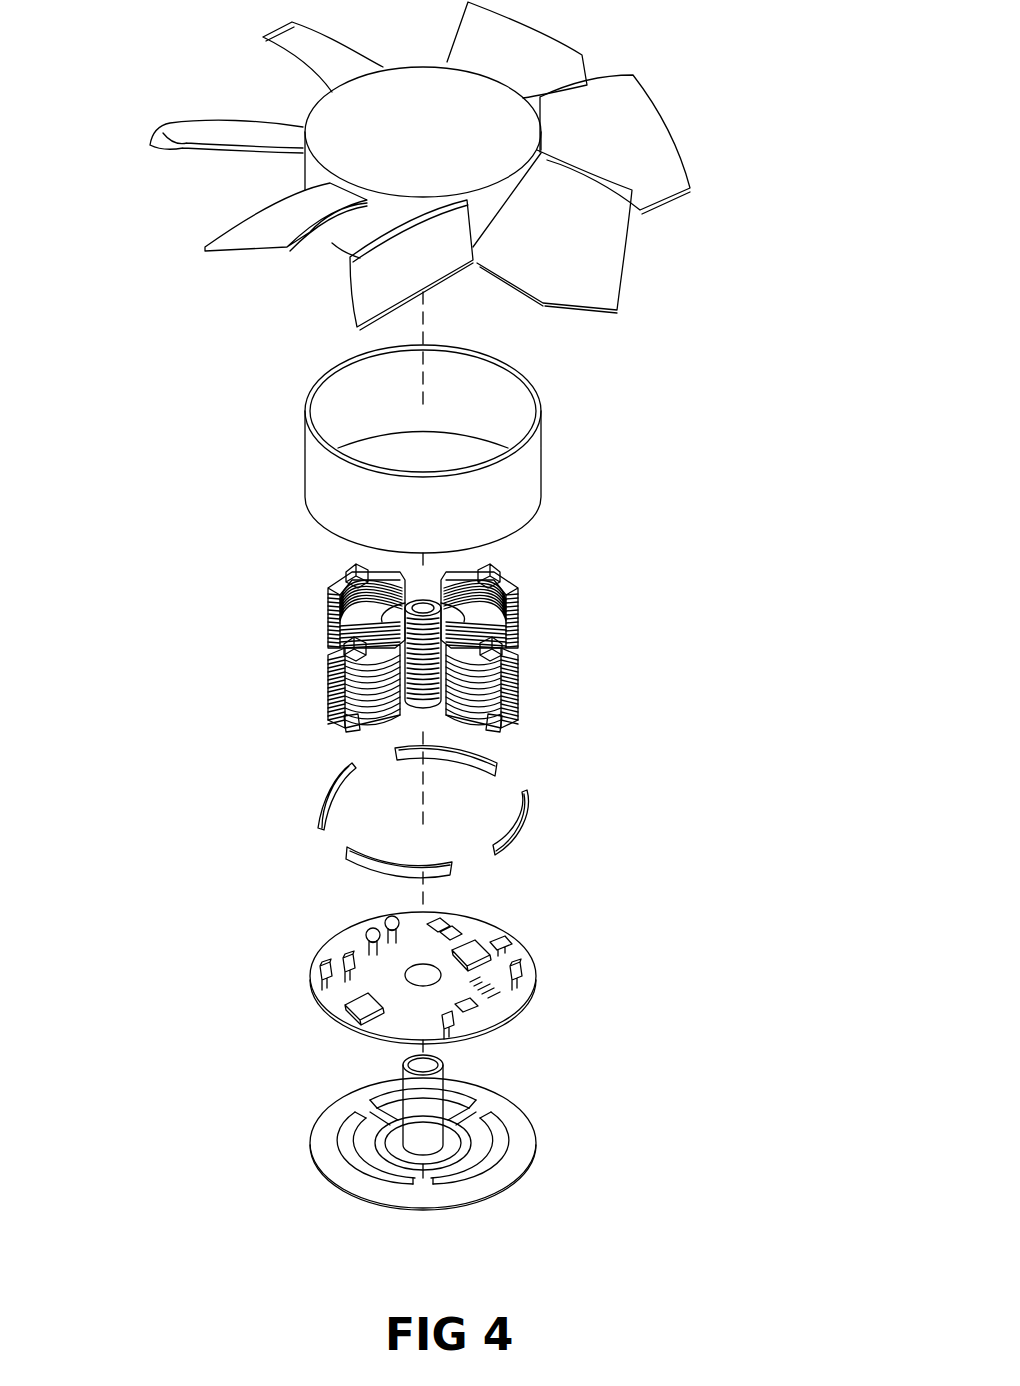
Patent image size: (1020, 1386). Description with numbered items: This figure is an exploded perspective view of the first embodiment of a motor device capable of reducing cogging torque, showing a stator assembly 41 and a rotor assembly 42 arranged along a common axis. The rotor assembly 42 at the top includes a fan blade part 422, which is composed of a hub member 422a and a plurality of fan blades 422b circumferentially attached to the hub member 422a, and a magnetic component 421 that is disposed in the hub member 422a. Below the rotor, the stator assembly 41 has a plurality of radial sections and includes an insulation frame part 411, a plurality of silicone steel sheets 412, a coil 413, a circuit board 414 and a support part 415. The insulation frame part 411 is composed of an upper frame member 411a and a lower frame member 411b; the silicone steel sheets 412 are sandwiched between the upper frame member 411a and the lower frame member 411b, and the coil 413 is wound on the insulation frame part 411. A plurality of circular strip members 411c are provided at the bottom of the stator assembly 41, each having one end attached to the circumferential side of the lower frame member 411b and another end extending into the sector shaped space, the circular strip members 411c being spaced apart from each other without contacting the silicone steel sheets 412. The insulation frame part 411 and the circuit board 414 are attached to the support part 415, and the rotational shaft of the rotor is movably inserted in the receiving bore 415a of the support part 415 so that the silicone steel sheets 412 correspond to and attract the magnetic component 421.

The stator assembly 41 is at (588, 575).
The insulation frame part 411 is at (180, 552).
The upper frame member 411a is at (340, 590).
The lower frame member 411b is at (333, 700).
The circular strip members 411c is at (332, 784).
The silicone steel sheets 412 is at (520, 695).
The coil 413 is at (517, 593).
The circuit board 414 is at (388, 975).
The support part 415 is at (522, 1100).
The receiving bore 415a is at (412, 1060).
The rotor assembly 42 is at (607, 60).
The magnetic component 421 is at (383, 405).
The fan blade part 422 is at (687, 145).
The hub member 422a is at (370, 125).
The fan blades 422b is at (653, 175).